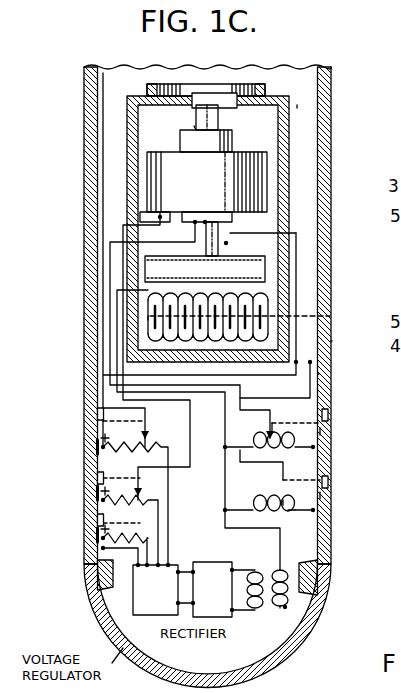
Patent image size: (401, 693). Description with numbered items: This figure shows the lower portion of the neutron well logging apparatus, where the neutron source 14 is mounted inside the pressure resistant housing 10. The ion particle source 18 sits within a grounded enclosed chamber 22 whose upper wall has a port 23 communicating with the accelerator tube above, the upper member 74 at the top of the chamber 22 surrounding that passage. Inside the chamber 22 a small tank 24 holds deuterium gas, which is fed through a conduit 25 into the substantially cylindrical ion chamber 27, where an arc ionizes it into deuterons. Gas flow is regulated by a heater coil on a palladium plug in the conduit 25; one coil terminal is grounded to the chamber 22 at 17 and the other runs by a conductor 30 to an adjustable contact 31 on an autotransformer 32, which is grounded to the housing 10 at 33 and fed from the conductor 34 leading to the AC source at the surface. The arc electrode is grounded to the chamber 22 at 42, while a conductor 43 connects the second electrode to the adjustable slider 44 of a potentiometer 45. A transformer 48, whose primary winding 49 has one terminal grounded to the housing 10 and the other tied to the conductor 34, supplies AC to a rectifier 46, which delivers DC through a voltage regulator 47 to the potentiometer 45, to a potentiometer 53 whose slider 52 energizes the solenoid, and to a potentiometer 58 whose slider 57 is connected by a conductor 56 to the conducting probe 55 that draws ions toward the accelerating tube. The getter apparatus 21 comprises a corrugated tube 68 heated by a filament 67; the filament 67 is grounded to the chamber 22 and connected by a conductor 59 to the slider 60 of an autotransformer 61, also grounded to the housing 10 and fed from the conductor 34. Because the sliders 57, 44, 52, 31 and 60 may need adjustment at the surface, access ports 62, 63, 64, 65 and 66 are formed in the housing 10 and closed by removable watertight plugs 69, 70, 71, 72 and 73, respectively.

The pressure resistant housing 10 is at (331, 162).
The neutron source 14 is at (297, 107).
The ground connection of heater coil 17 is at (226, 243).
The ion particle source 18 is at (269, 190).
The getter apparatus 21 is at (290, 296).
The enclosed chamber 22 is at (291, 126).
The port 23 is at (229, 113).
The tank 24 is at (290, 270).
The conduit 25 is at (232, 233).
The ion chamber 27 is at (233, 144).
The conductor 30 is at (333, 341).
The adjustable contact 31 is at (272, 444).
The autotransformer 32 is at (272, 481).
The ground connection of autotransformer 33 is at (318, 448).
The conductor 34 is at (103, 96).
The ground connection of arc electrode 42 is at (110, 233).
The conductor 43 is at (147, 318).
The adjustable slider 44 is at (155, 487).
The potentiometer 45 is at (129, 513).
The rectifier 46 is at (225, 601).
The voltage regulator 47 is at (166, 601).
The transformer 48 is at (265, 573).
The primary winding 49 is at (285, 607).
The slider 52 is at (160, 530).
The potentiometer 53 is at (100, 549).
The conducting probe 55 is at (194, 128).
The conductor 56 is at (110, 262).
The slider 57 is at (159, 438).
The potentiometer 58 is at (134, 493).
The conductor 59 is at (320, 374).
The slider 60 is at (282, 503).
The autotransformer 61 is at (291, 512).
The access port 62 is at (97, 437).
The access port 63 is at (97, 477).
The access port 64 is at (97, 519).
The access port 65 is at (329, 421).
The access port 66 is at (329, 485).
The filament 67 is at (333, 318).
The corrugated tube 68 is at (103, 290).
The watertight plug 69 is at (100, 414).
The watertight plug 70 is at (100, 490).
The watertight plug 71 is at (100, 532).
The watertight plug 72 is at (323, 432).
The watertight plug 73 is at (323, 495).
The top plate 74 is at (252, 84).